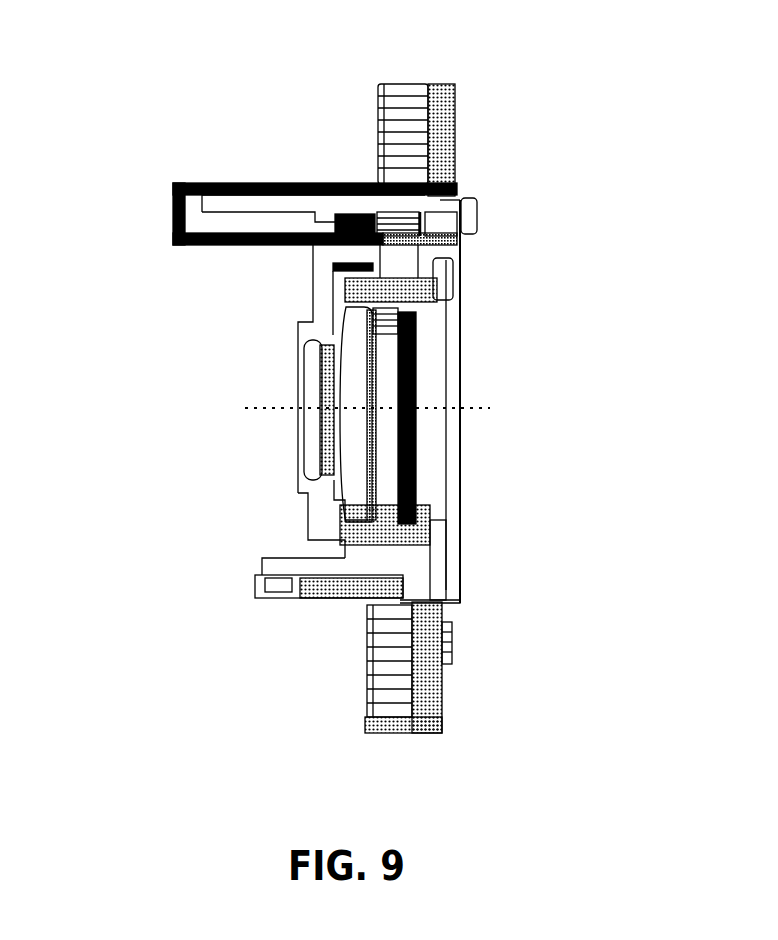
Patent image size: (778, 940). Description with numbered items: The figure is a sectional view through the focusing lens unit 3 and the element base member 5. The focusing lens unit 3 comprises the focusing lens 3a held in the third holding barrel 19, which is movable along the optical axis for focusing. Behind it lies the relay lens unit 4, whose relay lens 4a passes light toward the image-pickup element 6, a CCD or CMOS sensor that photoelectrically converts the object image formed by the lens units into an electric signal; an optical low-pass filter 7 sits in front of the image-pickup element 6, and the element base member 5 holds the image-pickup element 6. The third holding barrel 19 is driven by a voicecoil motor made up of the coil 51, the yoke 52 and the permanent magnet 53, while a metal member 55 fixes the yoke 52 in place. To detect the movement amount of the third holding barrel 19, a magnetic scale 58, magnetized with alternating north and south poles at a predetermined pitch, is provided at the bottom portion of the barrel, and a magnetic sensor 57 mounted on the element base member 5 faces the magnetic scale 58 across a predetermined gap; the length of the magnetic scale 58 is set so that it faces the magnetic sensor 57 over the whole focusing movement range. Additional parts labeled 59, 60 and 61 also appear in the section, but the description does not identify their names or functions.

The focusing lens unit 3 is at (284, 366).
The focusing lens 3a is at (312, 427).
The relay lens unit 4 is at (352, 595).
The relay lens 4a is at (347, 382).
The element base member 5 is at (442, 688).
The image-pickup element 6 is at (435, 420).
The optical low-pass filter 7 is at (388, 362).
The third holding barrel 19 is at (315, 493).
The coil 51 is at (355, 218).
The yoke 52 is at (232, 245).
The permanent magnet 53 is at (285, 205).
The metal member 55 is at (175, 203).
The magnetic sensor 57 is at (278, 582).
The magnetic scale 58 is at (295, 562).
The cover 59 is at (470, 214).
The housing 60 is at (450, 547).
The spring 61 is at (418, 300).